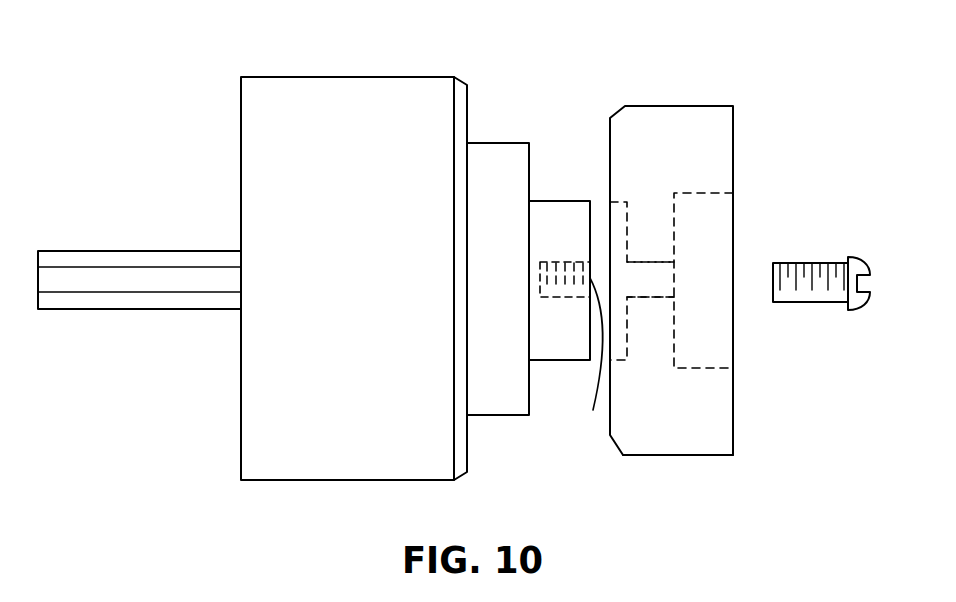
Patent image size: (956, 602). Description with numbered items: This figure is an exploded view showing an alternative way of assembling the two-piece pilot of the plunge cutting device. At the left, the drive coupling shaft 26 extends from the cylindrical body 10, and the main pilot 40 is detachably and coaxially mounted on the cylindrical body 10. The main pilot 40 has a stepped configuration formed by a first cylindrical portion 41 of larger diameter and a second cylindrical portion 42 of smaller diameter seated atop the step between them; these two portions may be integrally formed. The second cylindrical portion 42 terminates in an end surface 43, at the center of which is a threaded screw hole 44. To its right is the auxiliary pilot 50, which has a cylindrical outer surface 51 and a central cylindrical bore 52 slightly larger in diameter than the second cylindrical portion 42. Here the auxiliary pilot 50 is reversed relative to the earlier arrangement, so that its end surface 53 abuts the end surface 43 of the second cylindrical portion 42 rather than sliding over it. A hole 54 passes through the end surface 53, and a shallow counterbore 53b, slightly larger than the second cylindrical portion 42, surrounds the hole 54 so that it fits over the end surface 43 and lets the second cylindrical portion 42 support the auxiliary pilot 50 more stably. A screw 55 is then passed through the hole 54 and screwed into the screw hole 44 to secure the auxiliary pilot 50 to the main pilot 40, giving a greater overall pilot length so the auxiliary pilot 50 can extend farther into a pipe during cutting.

The cylindrical body 10 is at (355, 77).
The drive coupling shaft 26 is at (185, 251).
The main pilot 40 is at (543, 111).
The first cylindrical portion 41 is at (498, 143).
The second cylindrical portion 42 is at (548, 201).
The end surface 43 is at (591, 357).
The threaded screw hole 44 is at (588, 361).
The auxiliary pilot 50 is at (683, 106).
The cylindrical outer surface 51 is at (667, 455).
The cylindrical bore 52 is at (700, 368).
The end surface 53 is at (609, 432).
The counterbore 53b is at (620, 218).
The hole 54 is at (633, 298).
The screw 55 is at (853, 258).